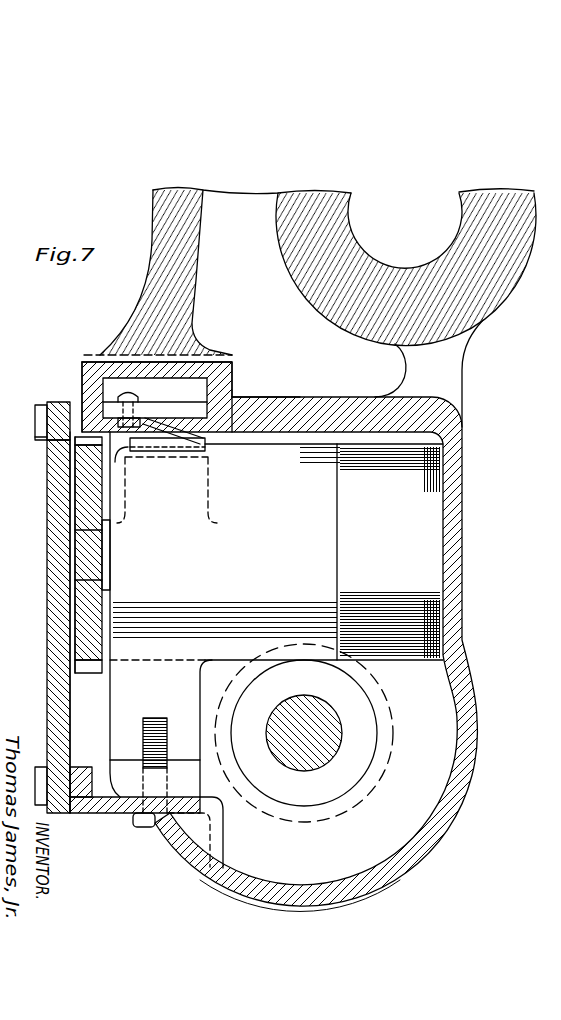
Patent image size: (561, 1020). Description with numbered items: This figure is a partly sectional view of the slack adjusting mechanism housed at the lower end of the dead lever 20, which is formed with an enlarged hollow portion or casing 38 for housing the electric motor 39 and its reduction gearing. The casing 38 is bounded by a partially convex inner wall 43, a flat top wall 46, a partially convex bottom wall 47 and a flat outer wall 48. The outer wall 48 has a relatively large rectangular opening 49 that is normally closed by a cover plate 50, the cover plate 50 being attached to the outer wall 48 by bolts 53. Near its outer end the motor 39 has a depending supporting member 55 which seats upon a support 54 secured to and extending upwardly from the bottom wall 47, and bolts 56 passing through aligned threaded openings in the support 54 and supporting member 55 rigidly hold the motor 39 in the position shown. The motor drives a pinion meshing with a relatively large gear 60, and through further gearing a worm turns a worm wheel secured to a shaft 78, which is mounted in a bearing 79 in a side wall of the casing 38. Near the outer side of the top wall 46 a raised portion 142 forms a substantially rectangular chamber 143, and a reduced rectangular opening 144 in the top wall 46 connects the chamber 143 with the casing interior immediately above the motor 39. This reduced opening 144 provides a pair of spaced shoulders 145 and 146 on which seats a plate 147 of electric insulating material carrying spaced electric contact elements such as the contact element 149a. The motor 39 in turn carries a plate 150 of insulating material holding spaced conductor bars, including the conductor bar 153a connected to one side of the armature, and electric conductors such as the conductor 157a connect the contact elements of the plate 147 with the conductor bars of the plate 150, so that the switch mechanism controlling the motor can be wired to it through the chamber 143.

The dead lever 20 is at (152, 226).
The casing 38 is at (462, 409).
The electric motor 39 is at (276, 552).
The inner wall 43 is at (453, 593).
The top wall 46 is at (312, 401).
The bottom wall 47 is at (286, 897).
The outer wall 48 is at (75, 765).
The rectangular opening 49 is at (82, 683).
The cover plate 50 is at (58, 629).
The bolts 53 is at (40, 427).
The support 54 is at (117, 777).
The supporting member 55 is at (125, 703).
The bolts 56 is at (145, 823).
The gear 60 is at (80, 504).
The shaft 78 is at (314, 705).
The bearing 79 is at (376, 762).
The raised portion 142 is at (222, 370).
The chamber 143 is at (172, 385).
The reduced rectangular opening 144 is at (212, 451).
The shoulder 145 is at (102, 404).
The shoulder 146 is at (214, 400).
The plate 147 is at (160, 410).
The electric contact element 149a is at (121, 399).
The plate 150 is at (167, 490).
The electric conductor bar 153a is at (138, 449).
The electric conductor 157a is at (149, 419).